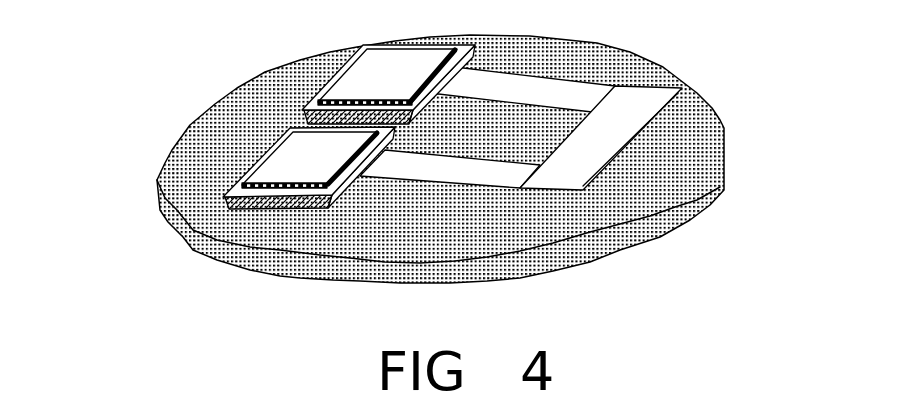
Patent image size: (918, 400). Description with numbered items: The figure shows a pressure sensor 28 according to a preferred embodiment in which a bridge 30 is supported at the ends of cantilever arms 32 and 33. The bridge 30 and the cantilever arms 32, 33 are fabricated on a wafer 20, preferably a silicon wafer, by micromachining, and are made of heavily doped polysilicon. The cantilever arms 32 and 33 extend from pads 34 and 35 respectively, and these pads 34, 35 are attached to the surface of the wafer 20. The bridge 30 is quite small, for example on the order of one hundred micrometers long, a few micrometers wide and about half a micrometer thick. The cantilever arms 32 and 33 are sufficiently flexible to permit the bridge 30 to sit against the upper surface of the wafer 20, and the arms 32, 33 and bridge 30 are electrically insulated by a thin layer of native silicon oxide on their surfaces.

The wafer 20 is at (663, 198).
The pressure sensor 28 is at (435, 175).
The bridge 30 is at (642, 106).
The cantilever arm 32 is at (467, 180).
The cantilever arm 33 is at (568, 96).
The pad 34 is at (270, 180).
The pad 35 is at (377, 63).